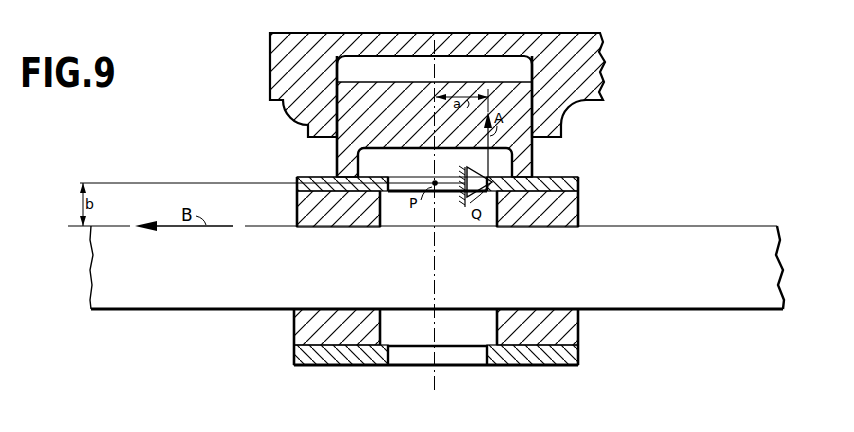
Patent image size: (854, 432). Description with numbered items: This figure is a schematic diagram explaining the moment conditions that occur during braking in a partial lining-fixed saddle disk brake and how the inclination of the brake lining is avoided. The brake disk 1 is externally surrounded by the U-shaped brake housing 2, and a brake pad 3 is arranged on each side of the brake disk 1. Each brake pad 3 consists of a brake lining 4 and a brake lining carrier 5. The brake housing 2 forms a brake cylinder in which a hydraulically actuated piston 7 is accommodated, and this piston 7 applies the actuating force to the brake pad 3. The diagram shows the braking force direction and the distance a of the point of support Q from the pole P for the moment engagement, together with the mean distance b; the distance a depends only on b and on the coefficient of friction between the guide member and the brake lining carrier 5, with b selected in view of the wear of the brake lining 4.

The brake disk 1 is at (655, 246).
The brake housing 2 is at (588, 63).
The brake pad 3 is at (323, 206).
The brake lining 4 is at (568, 212).
The brake lining carrier 5 is at (580, 181).
The piston 7 is at (527, 163).